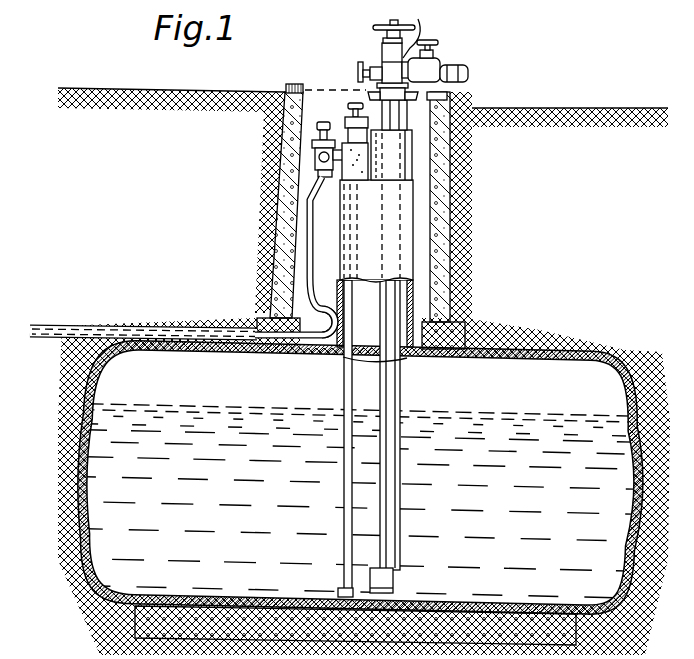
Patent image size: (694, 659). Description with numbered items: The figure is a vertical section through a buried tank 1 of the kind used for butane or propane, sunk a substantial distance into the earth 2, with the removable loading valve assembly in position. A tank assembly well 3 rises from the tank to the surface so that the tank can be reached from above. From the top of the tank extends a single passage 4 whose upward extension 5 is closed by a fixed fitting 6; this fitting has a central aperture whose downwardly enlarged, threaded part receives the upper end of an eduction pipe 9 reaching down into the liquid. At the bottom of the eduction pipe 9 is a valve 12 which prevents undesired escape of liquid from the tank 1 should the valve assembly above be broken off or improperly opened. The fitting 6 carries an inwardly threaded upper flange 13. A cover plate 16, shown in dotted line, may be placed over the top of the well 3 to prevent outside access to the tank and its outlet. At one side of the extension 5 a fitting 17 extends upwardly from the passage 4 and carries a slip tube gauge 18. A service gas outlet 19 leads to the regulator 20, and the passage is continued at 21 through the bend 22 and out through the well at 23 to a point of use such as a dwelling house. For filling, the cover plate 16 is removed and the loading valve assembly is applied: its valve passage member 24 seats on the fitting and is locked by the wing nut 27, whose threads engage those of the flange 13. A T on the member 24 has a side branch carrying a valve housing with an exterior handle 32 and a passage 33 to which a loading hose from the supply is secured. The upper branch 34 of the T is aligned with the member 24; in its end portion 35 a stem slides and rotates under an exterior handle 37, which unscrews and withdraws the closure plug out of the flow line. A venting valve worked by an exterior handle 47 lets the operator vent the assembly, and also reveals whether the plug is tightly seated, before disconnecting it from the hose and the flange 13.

The buried tank 1 is at (539, 352).
The earth 2 is at (627, 108).
The tank assembly well 3 is at (446, 244).
The single passage 4 is at (413, 270).
The upward extension 5 is at (412, 160).
The fixed fitting 6 is at (415, 146).
The eduction pipe 9 is at (400, 397).
The valve 12 is at (393, 583).
The upper flange 13 is at (408, 120).
The cover plate 16 is at (307, 90).
The fitting 17 is at (344, 128).
The slip tube gauge 18 is at (344, 393).
The service gas outlet 19 is at (341, 168).
The regulator 20 is at (283, 149).
The passage 21 is at (307, 243).
The bend 22 is at (320, 340).
The service line 23 is at (258, 324).
The valve passage member 24 is at (418, 90).
The wing nut 27 is at (440, 99).
The exterior handle 32 is at (430, 41).
The loading passage 33 is at (458, 67).
The upper branch 34 is at (413, 30).
The end portion 35 is at (382, 42).
The exterior handle 37 is at (384, 22).
The exterior handle 47 is at (360, 63).